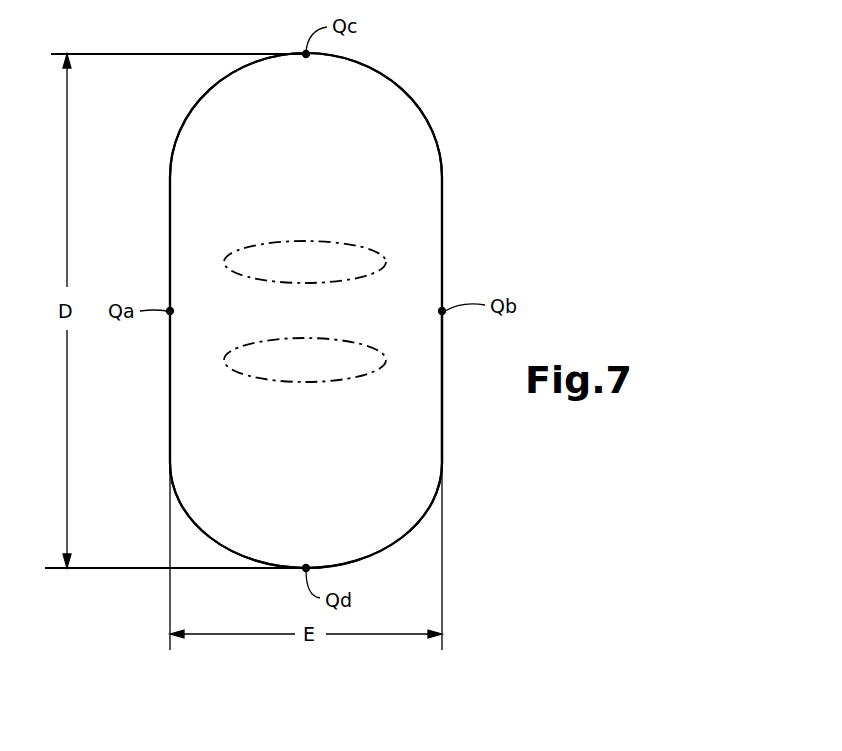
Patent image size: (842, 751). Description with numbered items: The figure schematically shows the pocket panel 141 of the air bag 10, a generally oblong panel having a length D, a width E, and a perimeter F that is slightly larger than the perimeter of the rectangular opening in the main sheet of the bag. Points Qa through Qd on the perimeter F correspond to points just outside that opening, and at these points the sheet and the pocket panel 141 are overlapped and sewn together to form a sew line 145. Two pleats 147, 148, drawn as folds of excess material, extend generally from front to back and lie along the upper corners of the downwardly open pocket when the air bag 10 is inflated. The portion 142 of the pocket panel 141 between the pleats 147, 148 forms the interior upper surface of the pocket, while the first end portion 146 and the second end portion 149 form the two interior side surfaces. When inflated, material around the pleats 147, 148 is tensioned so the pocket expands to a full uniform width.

The air bag 10 is at (592, 162).
The pocket panel 141 is at (514, 121).
The portion of the pocket panel 142 is at (310, 308).
The sew line 145 is at (442, 403).
The first end portion 146 is at (340, 117).
The pleat 147 is at (313, 240).
The pleat 148 is at (309, 383).
The second end portion 149 is at (330, 494).